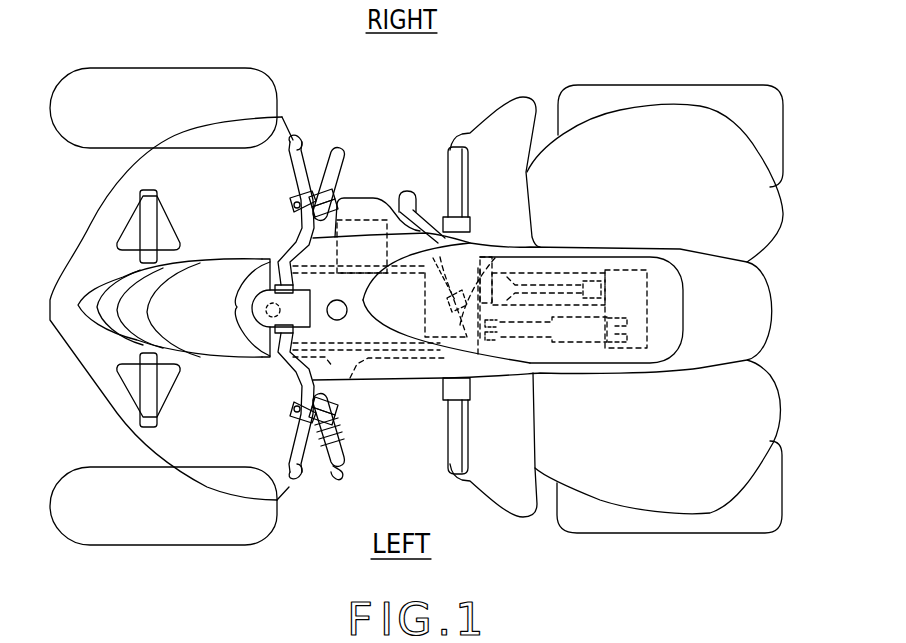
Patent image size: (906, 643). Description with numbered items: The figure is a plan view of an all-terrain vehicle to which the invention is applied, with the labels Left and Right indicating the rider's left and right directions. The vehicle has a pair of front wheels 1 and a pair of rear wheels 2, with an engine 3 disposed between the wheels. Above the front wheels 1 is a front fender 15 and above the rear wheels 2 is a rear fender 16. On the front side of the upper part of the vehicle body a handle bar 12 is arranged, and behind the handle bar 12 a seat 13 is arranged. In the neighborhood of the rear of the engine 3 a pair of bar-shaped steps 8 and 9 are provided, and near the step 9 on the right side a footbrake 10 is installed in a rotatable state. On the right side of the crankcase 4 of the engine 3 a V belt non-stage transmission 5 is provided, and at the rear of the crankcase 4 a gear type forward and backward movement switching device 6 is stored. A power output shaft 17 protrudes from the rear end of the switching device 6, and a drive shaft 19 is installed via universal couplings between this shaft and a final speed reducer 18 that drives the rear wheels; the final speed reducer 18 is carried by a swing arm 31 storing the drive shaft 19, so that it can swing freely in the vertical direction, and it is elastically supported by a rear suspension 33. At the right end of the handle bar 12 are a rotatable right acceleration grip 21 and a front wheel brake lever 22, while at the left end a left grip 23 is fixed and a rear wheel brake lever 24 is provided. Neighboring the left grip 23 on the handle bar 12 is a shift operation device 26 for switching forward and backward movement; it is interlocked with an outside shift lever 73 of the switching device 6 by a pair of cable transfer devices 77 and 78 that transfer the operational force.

The front wheels 1 is at (118, 88).
The rear wheels 2 is at (658, 92).
The engine 3 is at (388, 385).
The crankcase 4 is at (328, 360).
The V belt non-stage transmission 5 is at (347, 248).
The gear type forward and backward movement switching device 6 is at (433, 357).
The step 8 is at (450, 457).
The step 9 is at (450, 147).
The footbrake 10 is at (408, 193).
The handle bar 12 is at (300, 250).
The seat 13 is at (660, 275).
The front fender 15 is at (183, 167).
The rear fender 16 is at (763, 207).
The power output shaft 17 is at (488, 250).
The final speed reducer 18 is at (650, 307).
The drive shaft 19 is at (572, 273).
The right acceleration grip 21 is at (328, 152).
The front wheel brake lever 22 is at (298, 160).
The left grip 23 is at (332, 473).
The rear wheel brake lever 24 is at (297, 448).
The shift operation device 26 is at (350, 427).
The swing arm 31 is at (545, 270).
The rear suspension 33 is at (572, 348).
The outside shift lever 73 is at (480, 363).
The cable transfer device 77 is at (372, 265).
The cable transfer device 78 is at (427, 302).